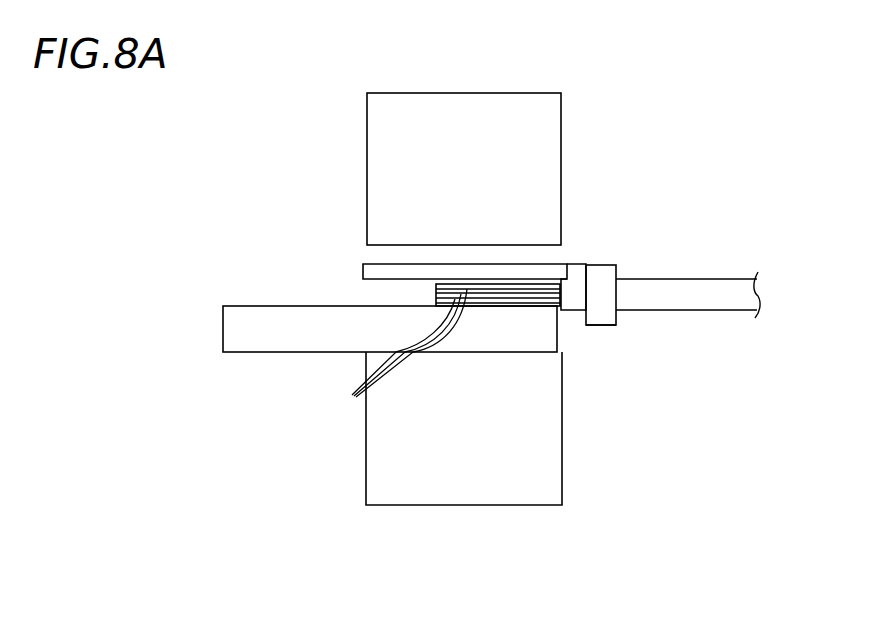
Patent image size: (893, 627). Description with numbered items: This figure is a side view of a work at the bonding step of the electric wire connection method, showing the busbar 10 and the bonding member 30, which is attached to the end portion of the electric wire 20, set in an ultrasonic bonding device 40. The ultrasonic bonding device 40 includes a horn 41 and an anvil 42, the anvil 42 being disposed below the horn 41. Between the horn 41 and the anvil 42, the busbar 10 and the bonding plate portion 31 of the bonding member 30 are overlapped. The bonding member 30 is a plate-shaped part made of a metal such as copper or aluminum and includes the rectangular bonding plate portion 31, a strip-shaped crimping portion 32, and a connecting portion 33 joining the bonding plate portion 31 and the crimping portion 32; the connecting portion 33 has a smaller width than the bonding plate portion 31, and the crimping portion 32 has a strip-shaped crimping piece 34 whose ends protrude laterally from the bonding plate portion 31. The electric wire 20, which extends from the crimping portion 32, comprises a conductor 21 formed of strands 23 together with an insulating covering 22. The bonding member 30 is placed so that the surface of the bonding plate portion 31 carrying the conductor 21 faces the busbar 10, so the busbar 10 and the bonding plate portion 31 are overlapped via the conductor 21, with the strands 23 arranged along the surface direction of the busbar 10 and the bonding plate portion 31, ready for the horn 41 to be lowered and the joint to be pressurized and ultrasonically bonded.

The busbar 10 is at (243, 361).
The electric wire 20 is at (710, 269).
The conductor 21 is at (510, 307).
The arm 22 is at (672, 300).
The strands 23 is at (350, 397).
The bonding member 30 is at (567, 260).
The bonding plate portion 31 is at (495, 272).
The crimping portion 32 is at (602, 265).
The connecting portion 33 is at (580, 265).
The crimping piece 34 is at (605, 324).
The ultrasonic bonding device 40 is at (340, 151).
The horn 41 is at (367, 194).
The anvil 42 is at (377, 462).